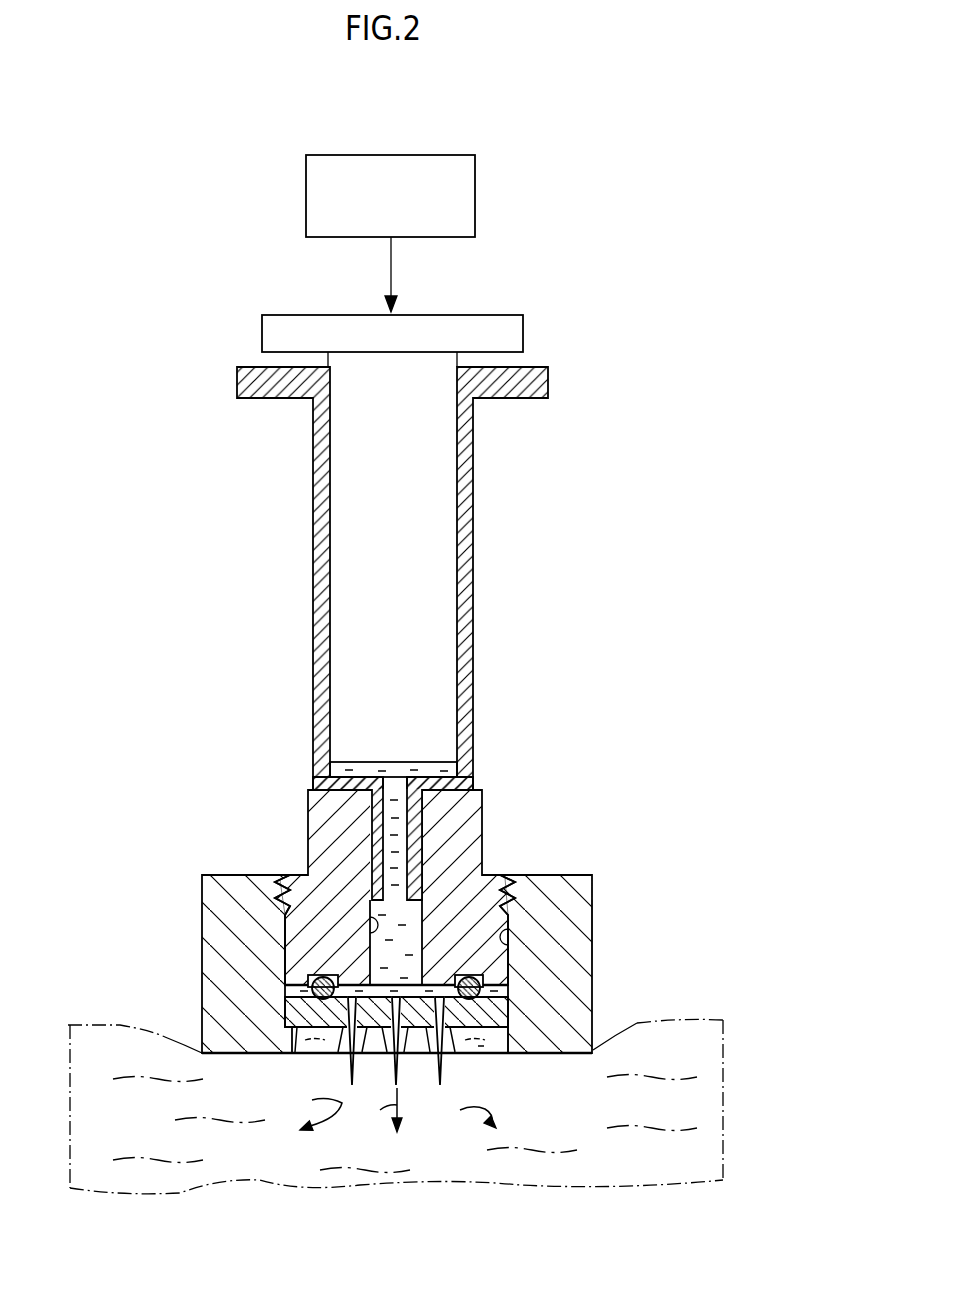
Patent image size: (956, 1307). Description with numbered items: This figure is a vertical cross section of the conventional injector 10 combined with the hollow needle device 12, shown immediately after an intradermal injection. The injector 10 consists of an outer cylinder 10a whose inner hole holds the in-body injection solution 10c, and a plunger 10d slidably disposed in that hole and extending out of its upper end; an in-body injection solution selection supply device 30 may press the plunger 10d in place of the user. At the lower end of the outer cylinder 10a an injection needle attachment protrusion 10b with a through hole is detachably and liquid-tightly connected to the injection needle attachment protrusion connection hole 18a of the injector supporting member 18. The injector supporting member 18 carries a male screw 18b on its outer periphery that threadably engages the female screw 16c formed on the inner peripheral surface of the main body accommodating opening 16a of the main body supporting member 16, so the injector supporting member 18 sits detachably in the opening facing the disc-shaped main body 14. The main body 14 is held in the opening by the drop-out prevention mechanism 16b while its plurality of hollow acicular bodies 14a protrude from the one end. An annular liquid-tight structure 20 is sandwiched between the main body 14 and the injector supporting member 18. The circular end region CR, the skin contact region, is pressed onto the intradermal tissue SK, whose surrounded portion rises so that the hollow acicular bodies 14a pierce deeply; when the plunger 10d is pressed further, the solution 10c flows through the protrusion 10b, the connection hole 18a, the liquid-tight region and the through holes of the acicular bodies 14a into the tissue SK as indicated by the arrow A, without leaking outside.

The in-body injection solution selection supply device 30 is at (477, 196).
The injector 10 is at (394, 607).
The outer cylinder 10a is at (471, 538).
The injection needle attachment protrusion 10b is at (368, 822).
The in-body injection solution 10c is at (455, 765).
The plunger 10d is at (434, 440).
The hollow needle device 12 is at (417, 971).
The main body 14 is at (468, 1074).
The hollow acicular bodies 14a is at (445, 1065).
The main body supporting member 16 is at (417, 995).
The main body accommodating opening 16a is at (513, 930).
The drop-out prevention mechanism 16b is at (513, 1053).
The female screw 16c is at (290, 915).
The injector supporting member 18 is at (459, 881).
The injection needle attachment protrusion connection hole 18a is at (380, 913).
The male screw 18b is at (513, 893).
The liquid-tight structure 20 is at (300, 991).
The intradermal tissue SK is at (436, 1106).
The circular end region CR is at (558, 1054).
The arrow A is at (402, 1108).